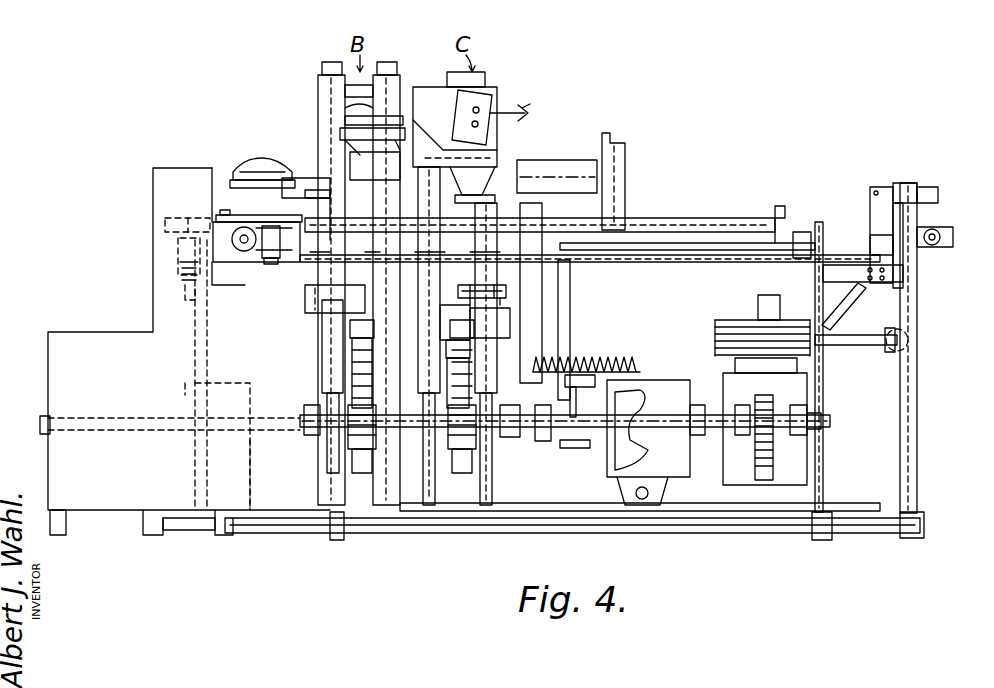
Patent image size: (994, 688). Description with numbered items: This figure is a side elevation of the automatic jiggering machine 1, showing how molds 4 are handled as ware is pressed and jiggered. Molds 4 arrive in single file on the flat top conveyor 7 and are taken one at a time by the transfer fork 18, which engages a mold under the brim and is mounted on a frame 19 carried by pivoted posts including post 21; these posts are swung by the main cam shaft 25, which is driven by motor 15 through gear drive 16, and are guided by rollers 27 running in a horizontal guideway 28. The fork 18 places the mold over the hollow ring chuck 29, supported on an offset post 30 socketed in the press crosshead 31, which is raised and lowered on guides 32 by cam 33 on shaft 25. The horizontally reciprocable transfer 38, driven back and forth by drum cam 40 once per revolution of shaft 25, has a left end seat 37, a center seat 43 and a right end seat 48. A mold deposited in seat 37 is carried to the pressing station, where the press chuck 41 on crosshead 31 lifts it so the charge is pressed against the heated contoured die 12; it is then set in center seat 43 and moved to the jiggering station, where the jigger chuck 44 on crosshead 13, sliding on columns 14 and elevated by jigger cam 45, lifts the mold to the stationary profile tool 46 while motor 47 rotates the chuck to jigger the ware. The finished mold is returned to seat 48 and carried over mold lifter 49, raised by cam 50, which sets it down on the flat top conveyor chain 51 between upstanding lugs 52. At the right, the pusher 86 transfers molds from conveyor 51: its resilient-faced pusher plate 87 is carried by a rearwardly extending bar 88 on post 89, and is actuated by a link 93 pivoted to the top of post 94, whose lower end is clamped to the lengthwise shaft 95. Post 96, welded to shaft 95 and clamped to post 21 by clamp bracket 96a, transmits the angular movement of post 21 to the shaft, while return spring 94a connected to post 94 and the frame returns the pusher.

The automatic jiggering machine 1 is at (144, 293).
The mold 4 is at (240, 158).
The conveyor 7 is at (286, 252).
The heated contoured die 12 is at (350, 116).
The crosshead 13 is at (470, 355).
The columns 14 is at (470, 395).
The motor 15 is at (510, 285).
The gear drive 16 is at (760, 478).
The transfer fork 18 is at (248, 215).
The frame 19 is at (190, 218).
The post 21 is at (207, 310).
The main cam shaft 25 is at (45, 416).
The rollers 27 is at (189, 288).
The horizontal guideway 28 is at (175, 262).
The ring chuck 29 is at (232, 180).
The post 30 is at (310, 218).
The press crosshead 31 is at (305, 300).
The guides 32 is at (322, 395).
The cam 33 is at (360, 462).
The left end seat 37 is at (330, 178).
The transfer 38 is at (640, 218).
The drum cam 40 is at (678, 470).
The press chuck 41 is at (340, 132).
The center seat 43 is at (485, 195).
The jigger chuck 44 is at (490, 148).
The jigger cam 45 is at (460, 465).
The profile tool 46 is at (490, 110).
The motor 47 is at (508, 330).
The right end mold seat 48 is at (575, 210).
The mold lifter 49 is at (580, 205).
The cam 50 is at (543, 450).
The conveyor chain 51 is at (778, 216).
The lugs 52 is at (804, 232).
The pusher 86 is at (906, 175).
The pusher plate 87 is at (938, 195).
The bar 88 is at (870, 200).
The post 89 is at (878, 238).
The link 93 is at (905, 185).
The post 94 is at (917, 296).
The return spring 94a is at (890, 330).
The shaft 95 is at (290, 533).
The post 96 is at (250, 485).
The clamp bracket 96a is at (236, 382).